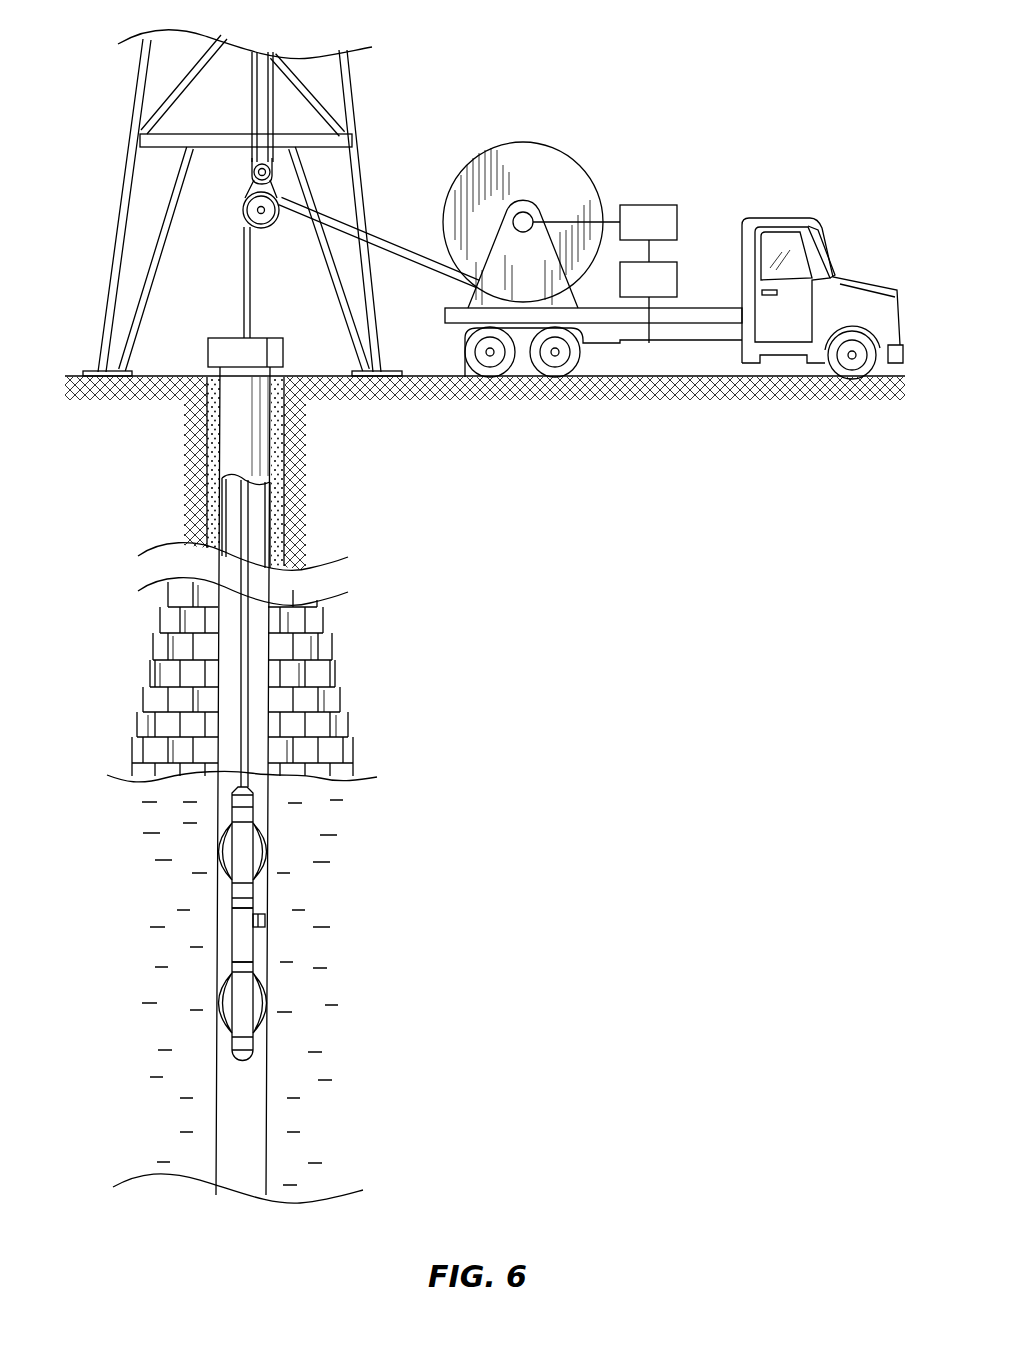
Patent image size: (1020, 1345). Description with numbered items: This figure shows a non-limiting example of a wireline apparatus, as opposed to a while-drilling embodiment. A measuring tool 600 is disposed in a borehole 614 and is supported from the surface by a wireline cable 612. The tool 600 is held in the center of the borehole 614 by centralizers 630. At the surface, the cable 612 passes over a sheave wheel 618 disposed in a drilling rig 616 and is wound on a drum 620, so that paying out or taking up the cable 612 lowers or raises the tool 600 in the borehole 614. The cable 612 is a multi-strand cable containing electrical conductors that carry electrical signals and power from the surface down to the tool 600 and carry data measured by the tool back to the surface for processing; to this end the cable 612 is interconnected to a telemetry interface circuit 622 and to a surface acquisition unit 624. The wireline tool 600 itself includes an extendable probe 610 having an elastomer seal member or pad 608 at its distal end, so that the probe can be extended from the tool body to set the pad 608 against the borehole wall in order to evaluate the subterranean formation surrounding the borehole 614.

The measuring tool 600 is at (302, 924).
The pad 608 is at (267, 923).
The extendable probe 610 is at (258, 932).
The wireline cable 612 is at (252, 318).
The borehole 614 is at (266, 526).
The drilling rig 616 is at (132, 100).
The sheave wheel 618 is at (256, 210).
The drum 620 is at (522, 143).
The telemetry interface circuit 622 is at (648, 206).
The surface acquisition unit 624 is at (678, 283).
The centralizers 630 is at (267, 833).